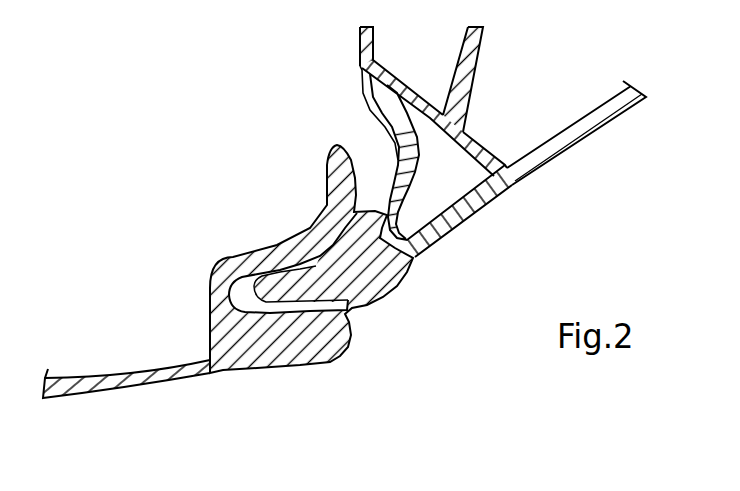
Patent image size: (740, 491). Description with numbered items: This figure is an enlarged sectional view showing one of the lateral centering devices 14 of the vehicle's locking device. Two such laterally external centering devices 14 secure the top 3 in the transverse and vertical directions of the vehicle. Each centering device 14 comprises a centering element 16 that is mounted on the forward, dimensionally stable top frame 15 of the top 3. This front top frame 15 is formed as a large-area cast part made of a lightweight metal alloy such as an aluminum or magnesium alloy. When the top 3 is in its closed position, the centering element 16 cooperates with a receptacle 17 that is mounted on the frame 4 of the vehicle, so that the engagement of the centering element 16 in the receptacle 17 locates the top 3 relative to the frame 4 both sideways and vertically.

The top 3 is at (492, 52).
The frame 4 is at (173, 224).
The centering device 14 is at (366, 340).
The top frame 15 is at (592, 124).
The centering element 16 is at (408, 266).
The receptacle 17 is at (247, 297).